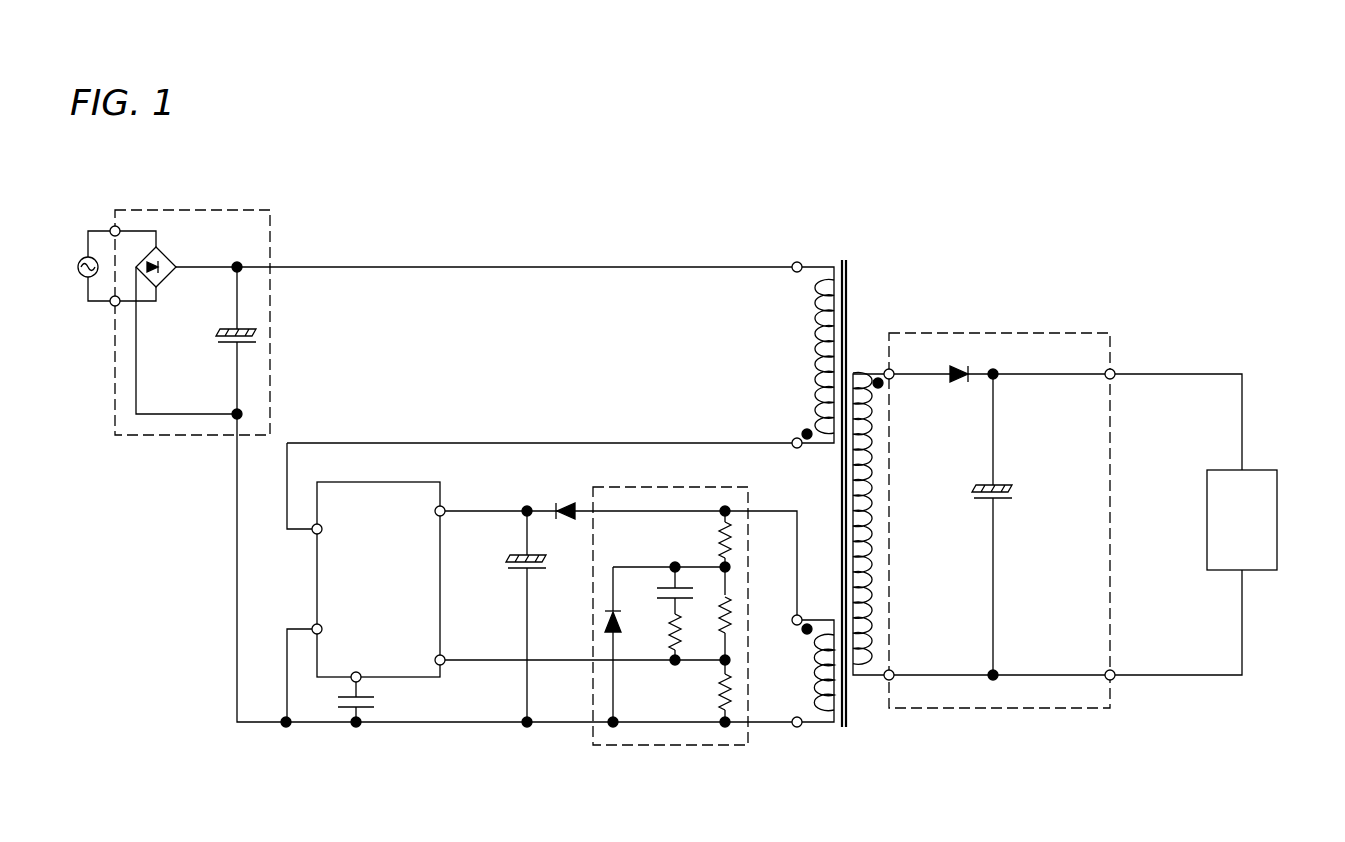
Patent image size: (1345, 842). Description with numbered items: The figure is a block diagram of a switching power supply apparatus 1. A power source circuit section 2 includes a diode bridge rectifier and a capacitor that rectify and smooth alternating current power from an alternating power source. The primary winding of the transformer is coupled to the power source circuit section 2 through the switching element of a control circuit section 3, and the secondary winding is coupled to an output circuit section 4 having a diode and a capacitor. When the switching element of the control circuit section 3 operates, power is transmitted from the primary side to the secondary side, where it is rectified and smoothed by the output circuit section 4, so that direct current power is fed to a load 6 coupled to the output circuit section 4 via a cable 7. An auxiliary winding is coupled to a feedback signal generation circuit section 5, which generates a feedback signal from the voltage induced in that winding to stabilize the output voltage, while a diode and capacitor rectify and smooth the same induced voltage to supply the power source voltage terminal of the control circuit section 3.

The switching power supply apparatus 1 is at (1098, 131).
The power source circuit section 2 is at (221, 200).
The control circuit section 3 is at (456, 491).
The output circuit section 4 is at (1058, 320).
The feedback signal generation circuit section 5 is at (655, 760).
The load 6 is at (1278, 520).
The cable 7 is at (1192, 372).